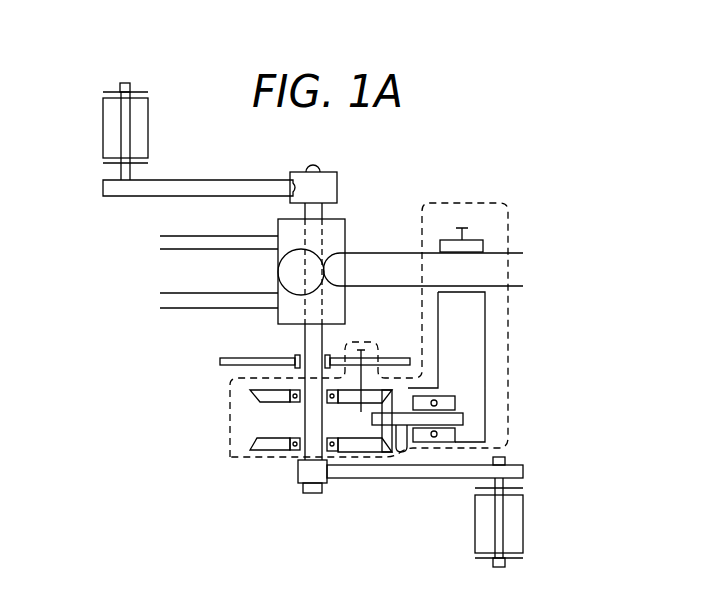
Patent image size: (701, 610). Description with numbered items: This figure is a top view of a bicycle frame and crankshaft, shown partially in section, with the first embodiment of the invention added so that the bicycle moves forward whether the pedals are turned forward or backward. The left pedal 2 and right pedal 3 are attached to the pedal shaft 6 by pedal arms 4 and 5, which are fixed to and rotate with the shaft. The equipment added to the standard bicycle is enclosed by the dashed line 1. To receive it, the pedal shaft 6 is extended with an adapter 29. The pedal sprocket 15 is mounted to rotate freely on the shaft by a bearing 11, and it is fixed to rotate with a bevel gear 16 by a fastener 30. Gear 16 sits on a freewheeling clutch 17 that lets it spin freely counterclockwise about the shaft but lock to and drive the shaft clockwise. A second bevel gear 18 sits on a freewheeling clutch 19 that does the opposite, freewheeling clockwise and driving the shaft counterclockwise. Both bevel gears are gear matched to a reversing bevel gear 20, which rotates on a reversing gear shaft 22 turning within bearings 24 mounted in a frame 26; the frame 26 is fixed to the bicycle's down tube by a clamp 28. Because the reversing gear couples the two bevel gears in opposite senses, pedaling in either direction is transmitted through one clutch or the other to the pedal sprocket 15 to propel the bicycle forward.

The dashed line 1 is at (487, 202).
The left pedal 2 is at (149, 108).
The right pedal 3 is at (525, 518).
The pedal arm 4 is at (212, 179).
The pedal arm 5 is at (443, 478).
The pedal shaft 6 is at (323, 212).
The bearing 11 is at (297, 356).
The pedal sprocket 15 is at (220, 364).
The bevel gear 16 is at (256, 397).
The freewheeling clutch 17 is at (295, 406).
The bevel gear 18 is at (252, 442).
The freewheeling clutch 19 is at (295, 452).
The reversing bevel gear 20 is at (398, 452).
The reversing gear shaft 22 is at (411, 428).
The bearings 24 is at (455, 401).
The frame 26 is at (477, 322).
The clamp 28 is at (478, 232).
The adapter 29 is at (305, 340).
The fastener 30 is at (362, 348).